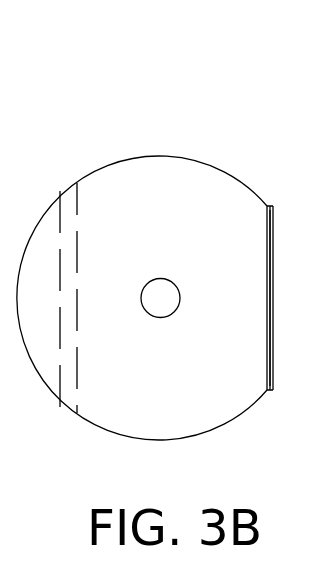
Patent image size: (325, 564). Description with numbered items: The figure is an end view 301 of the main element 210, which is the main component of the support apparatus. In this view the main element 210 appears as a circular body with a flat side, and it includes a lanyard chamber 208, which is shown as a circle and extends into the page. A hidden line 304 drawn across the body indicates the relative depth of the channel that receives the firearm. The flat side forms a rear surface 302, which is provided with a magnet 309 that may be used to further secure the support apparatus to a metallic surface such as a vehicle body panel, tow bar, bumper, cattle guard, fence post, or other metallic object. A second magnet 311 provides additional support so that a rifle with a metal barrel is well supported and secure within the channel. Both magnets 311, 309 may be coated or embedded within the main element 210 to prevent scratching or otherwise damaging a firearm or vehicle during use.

The end view 301 is at (166, 79).
The main element 210 is at (186, 157).
The rear surface 302 is at (272, 392).
The magnet 309 is at (262, 334).
The lanyard chamber 208 is at (176, 279).
The hidden line 304 is at (62, 194).
The magnet 311 is at (80, 248).